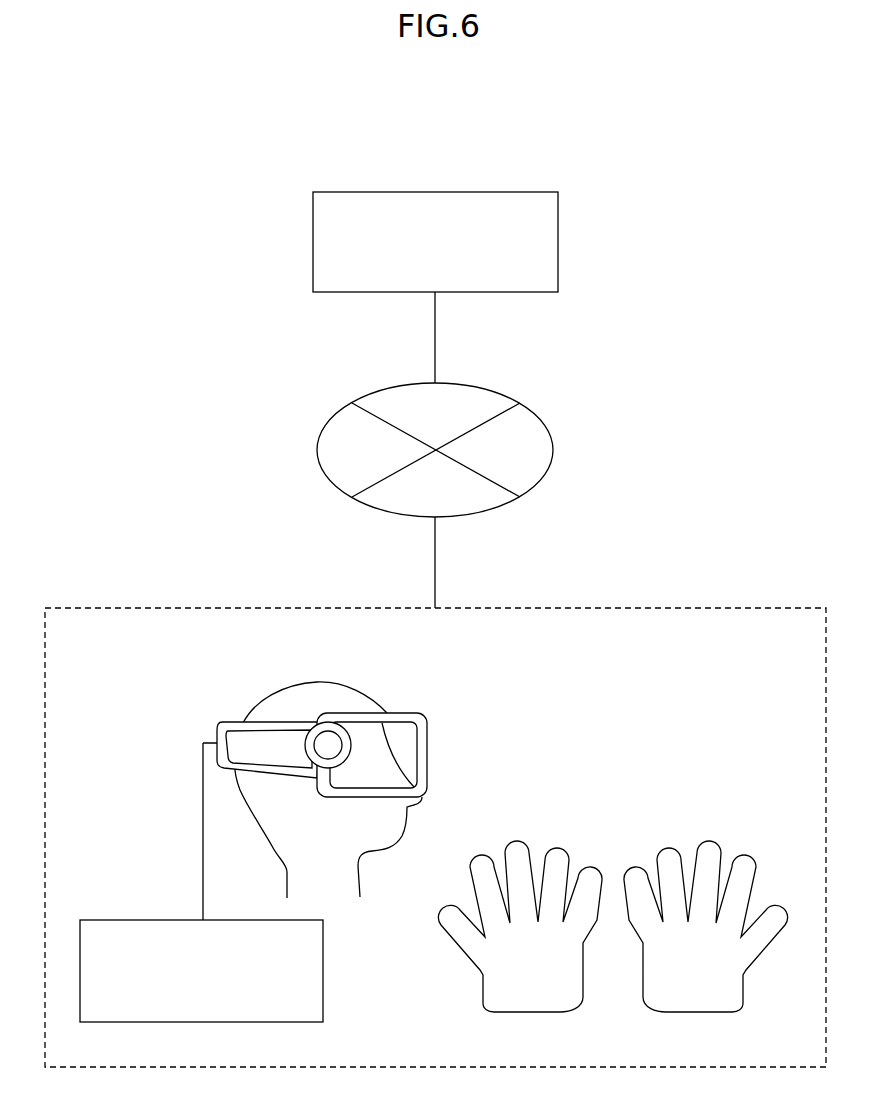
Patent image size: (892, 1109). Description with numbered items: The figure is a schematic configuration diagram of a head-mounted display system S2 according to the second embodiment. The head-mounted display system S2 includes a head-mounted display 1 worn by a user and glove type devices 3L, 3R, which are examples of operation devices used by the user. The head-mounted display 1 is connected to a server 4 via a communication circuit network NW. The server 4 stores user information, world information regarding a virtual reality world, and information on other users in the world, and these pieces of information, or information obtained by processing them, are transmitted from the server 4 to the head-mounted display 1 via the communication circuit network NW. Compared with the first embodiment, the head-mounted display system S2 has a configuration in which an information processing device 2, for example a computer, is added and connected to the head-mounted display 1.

The server 4 is at (437, 192).
The communication circuit network NW is at (533, 405).
The head-mounted display system S2 is at (718, 607).
The head-mounted display 1 is at (420, 713).
The information processing device 2 is at (137, 920).
The glove type device 3L is at (510, 850).
The glove type device 3R is at (712, 850).